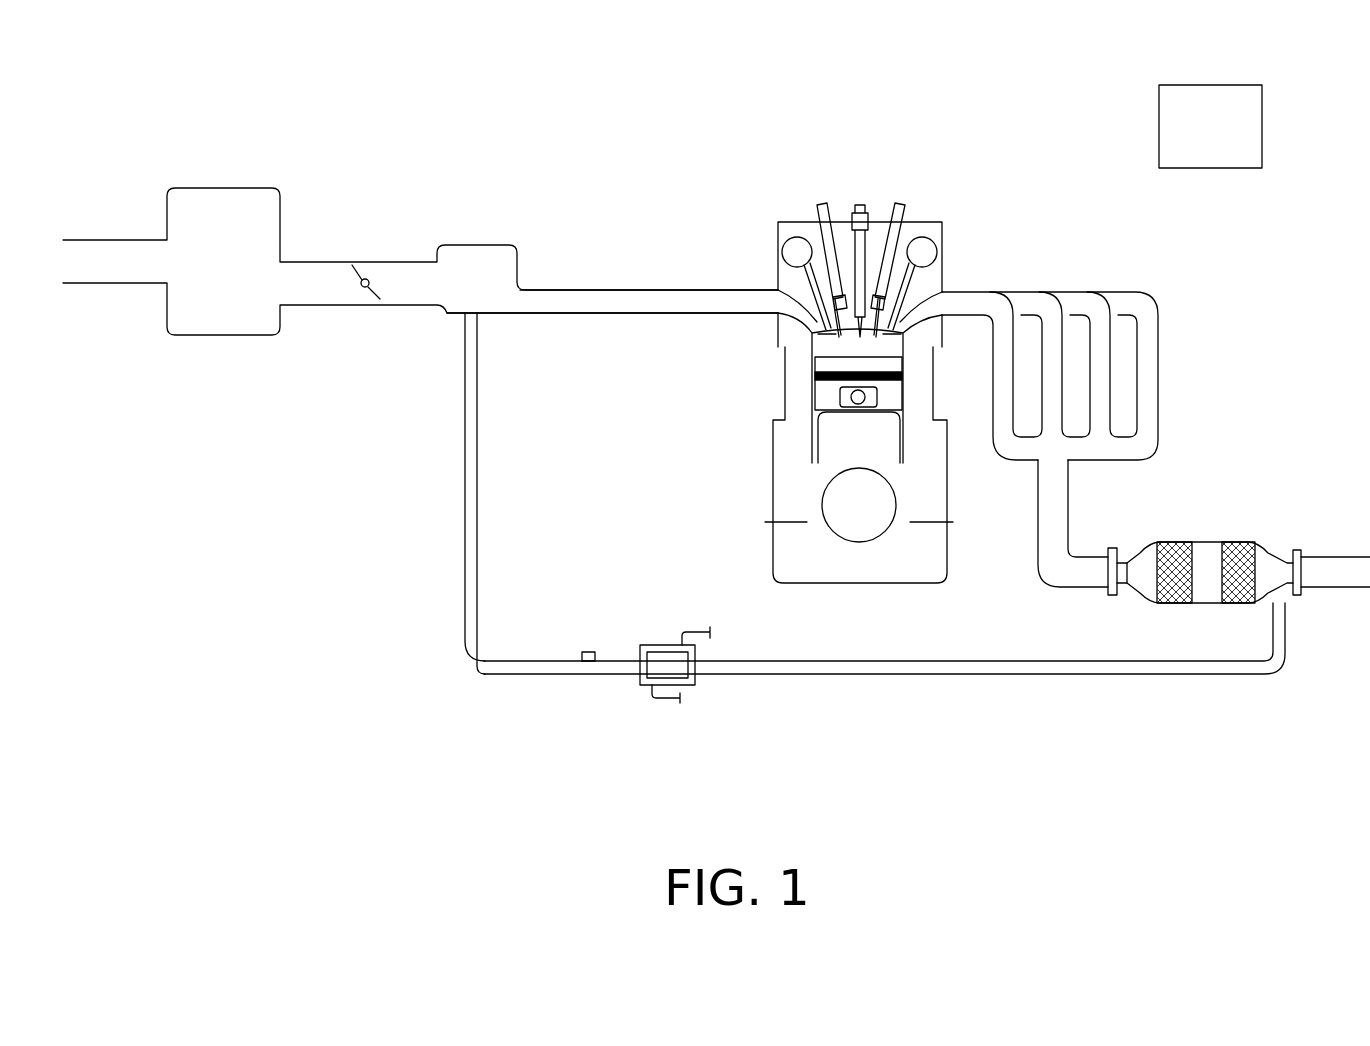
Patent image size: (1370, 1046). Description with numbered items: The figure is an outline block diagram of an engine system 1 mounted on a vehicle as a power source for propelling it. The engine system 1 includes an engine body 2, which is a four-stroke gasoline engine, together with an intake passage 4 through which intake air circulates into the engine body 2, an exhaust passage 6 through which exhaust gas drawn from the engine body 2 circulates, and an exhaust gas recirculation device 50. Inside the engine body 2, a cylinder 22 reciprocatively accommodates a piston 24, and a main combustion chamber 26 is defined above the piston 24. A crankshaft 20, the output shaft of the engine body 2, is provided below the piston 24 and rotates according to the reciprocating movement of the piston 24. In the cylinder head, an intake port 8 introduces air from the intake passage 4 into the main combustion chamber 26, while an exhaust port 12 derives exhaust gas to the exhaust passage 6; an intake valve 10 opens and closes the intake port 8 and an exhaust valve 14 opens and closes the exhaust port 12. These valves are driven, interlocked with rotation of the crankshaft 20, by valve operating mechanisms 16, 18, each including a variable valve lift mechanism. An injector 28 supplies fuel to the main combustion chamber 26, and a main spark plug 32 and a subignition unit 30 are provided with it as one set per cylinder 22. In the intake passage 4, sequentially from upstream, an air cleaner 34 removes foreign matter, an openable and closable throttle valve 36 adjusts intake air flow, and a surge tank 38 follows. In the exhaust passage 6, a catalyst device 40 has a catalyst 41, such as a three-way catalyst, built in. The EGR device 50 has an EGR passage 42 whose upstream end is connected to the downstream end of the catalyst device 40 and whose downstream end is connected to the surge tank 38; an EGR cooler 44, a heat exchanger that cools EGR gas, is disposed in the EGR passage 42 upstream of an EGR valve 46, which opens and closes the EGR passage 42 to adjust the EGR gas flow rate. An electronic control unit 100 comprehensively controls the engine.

The engine system 1 is at (555, 130).
The engine body 2 is at (896, 134).
The intake passage 4 is at (640, 290).
The exhaust passage 6 is at (1025, 292).
The intake port 8 is at (787, 302).
The intake valve 10 is at (813, 327).
The exhaust port 12 is at (932, 302).
The exhaust valve 14 is at (910, 327).
The valve operating mechanism 16 is at (780, 222).
The valve operating mechanism 18 is at (940, 226).
The crankshaft 20 is at (823, 493).
The cylinder 22 is at (823, 465).
The piston 24 is at (820, 398).
The main combustion chamber 26 is at (815, 357).
The injector 28 is at (860, 204).
The subignition unit 30 is at (902, 203).
The main spark plug 32 is at (822, 203).
The air cleaner 34 is at (222, 188).
The throttle valve 36 is at (365, 279).
The surge tank 38 is at (475, 245).
The catalyst device 40 is at (1255, 542).
The catalyst 41 is at (1235, 542).
The EGR passage 42 is at (1090, 675).
The EGR cooler 44 is at (686, 685).
The EGR valve 46 is at (588, 661).
The exhaust gas recirculation (EGR) device 50 is at (970, 722).
The electronic control unit (ECU) 100 is at (1209, 85).